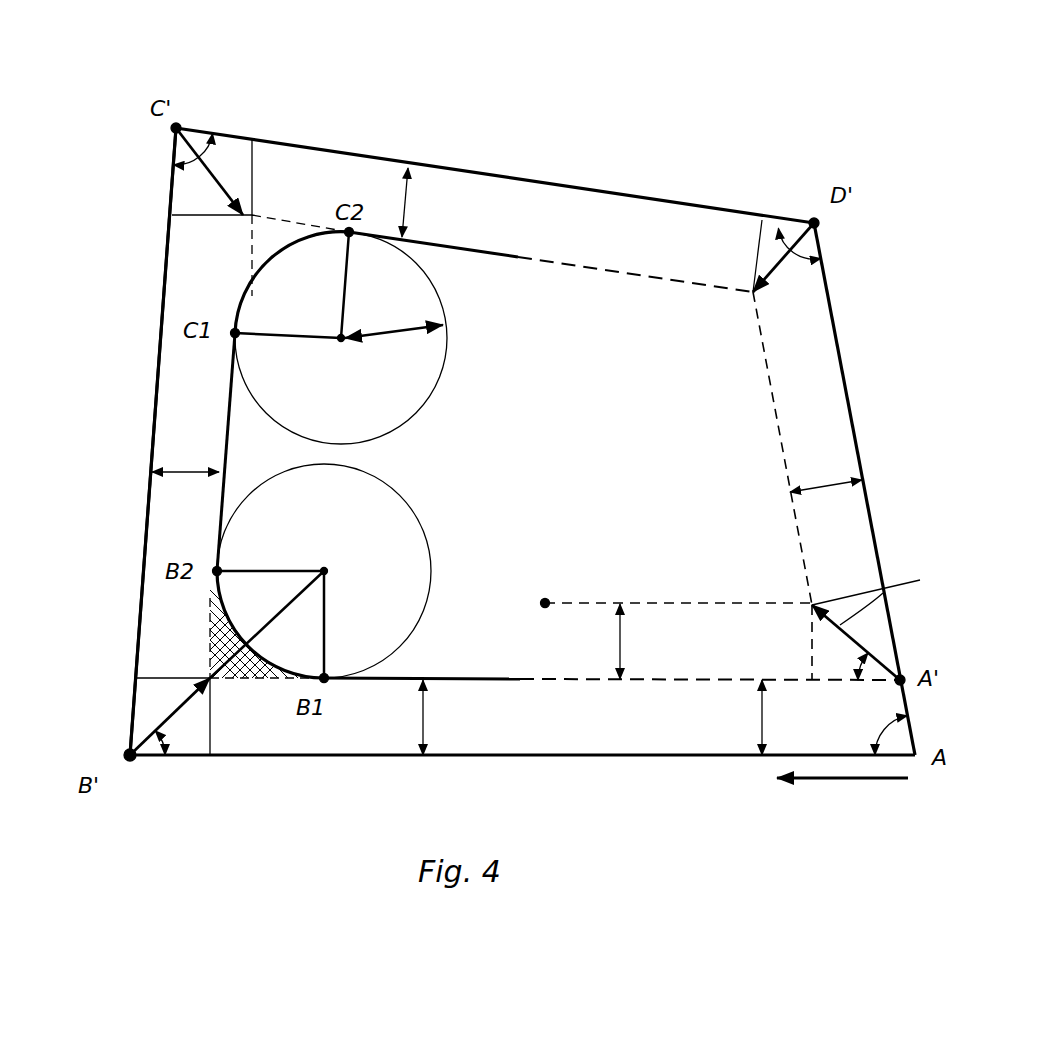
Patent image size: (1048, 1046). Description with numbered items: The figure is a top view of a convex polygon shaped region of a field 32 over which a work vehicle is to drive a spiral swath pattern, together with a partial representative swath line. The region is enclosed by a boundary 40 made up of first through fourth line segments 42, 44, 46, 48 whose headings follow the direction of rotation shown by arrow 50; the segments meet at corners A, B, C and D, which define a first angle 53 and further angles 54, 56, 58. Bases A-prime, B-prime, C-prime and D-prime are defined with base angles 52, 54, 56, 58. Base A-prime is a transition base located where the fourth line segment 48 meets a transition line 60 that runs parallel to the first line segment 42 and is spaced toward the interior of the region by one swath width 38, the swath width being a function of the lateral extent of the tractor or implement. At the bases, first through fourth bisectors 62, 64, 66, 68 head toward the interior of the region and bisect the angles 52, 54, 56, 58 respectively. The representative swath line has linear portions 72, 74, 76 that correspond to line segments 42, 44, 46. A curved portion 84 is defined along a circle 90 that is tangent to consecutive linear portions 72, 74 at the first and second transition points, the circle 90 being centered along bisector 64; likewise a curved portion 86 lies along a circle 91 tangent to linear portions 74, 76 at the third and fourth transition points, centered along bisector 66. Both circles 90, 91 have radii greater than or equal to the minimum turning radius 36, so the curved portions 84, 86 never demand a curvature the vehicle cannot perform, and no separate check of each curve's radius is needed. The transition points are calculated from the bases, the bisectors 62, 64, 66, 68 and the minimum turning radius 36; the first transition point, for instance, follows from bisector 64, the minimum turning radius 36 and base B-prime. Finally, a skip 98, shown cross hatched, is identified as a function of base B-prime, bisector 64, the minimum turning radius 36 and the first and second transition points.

The region of a field 32 is at (786, 112).
The minimum turning radius 36 is at (390, 342).
The swath width 38 is at (410, 205).
The boundary 40 is at (140, 238).
The first line segment 42 is at (313, 758).
The second line segment 44 is at (143, 548).
The third line segment 46 is at (440, 166).
The fourth line segment 48 is at (848, 383).
The arrow of direction of rotation 50 is at (812, 780).
The transition base angle 52 is at (890, 657).
The first angle 53 is at (890, 740).
The second angle 54 is at (155, 759).
The third angle 56 is at (197, 133).
The fourth angle 58 is at (818, 243).
The transition line 60 is at (684, 681).
The first bisector 62 is at (882, 619).
The second bisector 64 is at (200, 740).
The third bisector 66 is at (218, 176).
The fourth bisector 68 is at (808, 263).
The linear portion 72 is at (393, 682).
The linear portion 74 is at (218, 522).
The linear portion 76 is at (506, 255).
The curved portion 84 is at (275, 577).
The curved portion 86 is at (257, 278).
The circle 90 is at (392, 488).
The circle 91 is at (443, 357).
The skip 98 is at (222, 643).